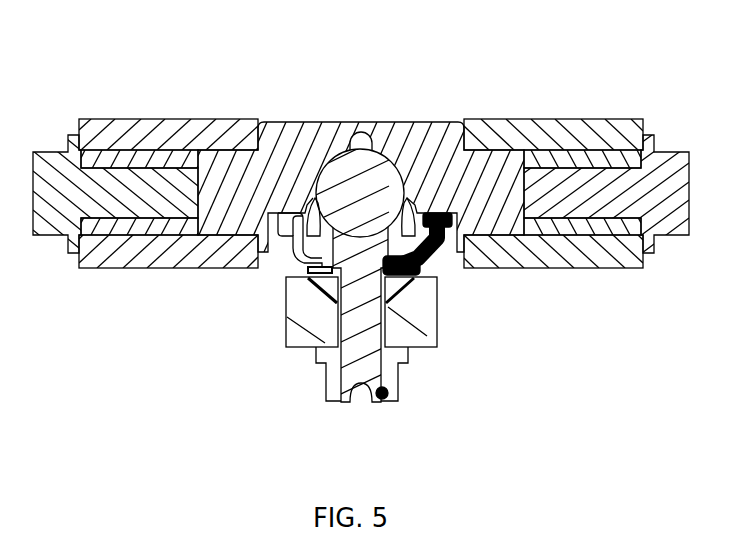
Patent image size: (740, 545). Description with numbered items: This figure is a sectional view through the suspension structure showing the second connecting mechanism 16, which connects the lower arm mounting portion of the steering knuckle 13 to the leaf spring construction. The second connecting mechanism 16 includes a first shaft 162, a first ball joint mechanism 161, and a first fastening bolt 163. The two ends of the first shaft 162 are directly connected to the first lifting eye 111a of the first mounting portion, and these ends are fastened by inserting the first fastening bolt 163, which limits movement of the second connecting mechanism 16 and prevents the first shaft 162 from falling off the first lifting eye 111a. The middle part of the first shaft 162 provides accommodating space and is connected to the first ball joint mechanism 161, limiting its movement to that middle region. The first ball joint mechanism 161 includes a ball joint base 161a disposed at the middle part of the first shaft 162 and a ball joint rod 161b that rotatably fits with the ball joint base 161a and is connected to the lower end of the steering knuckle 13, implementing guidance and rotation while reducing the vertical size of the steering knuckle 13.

The second connecting mechanism 16 is at (278, 239).
The first ball joint mechanism 161 is at (301, 264).
The ball joint base 161a is at (325, 165).
The ball joint rod 161b is at (352, 303).
The first shaft 162 is at (279, 153).
The first fastening bolt 163 is at (43, 150).
The steering knuckle 13 is at (413, 332).
The first lifting eye 111a is at (117, 268).